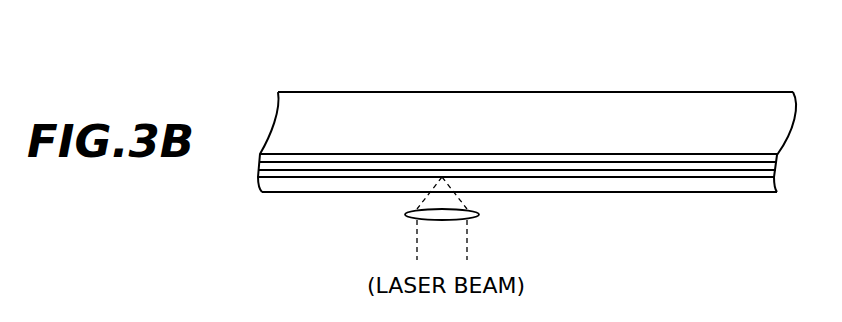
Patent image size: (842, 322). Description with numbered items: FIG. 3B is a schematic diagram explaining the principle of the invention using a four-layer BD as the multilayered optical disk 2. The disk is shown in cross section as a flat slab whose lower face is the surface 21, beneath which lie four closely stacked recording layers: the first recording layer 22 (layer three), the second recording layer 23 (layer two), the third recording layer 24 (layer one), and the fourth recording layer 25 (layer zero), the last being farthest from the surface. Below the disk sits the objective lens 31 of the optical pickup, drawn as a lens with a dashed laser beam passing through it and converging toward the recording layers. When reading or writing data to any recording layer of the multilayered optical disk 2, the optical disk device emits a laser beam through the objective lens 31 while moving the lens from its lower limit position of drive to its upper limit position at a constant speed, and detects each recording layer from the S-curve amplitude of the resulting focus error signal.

The multilayered optical disk 2 is at (623, 91).
The surface 21 is at (508, 192).
The first recording layer 22 is at (547, 177).
The second recording layer 23 is at (597, 170).
The third recording layer 24 is at (647, 162).
The fourth recording layer 25 is at (703, 154).
The objective lens 31 is at (405, 213).